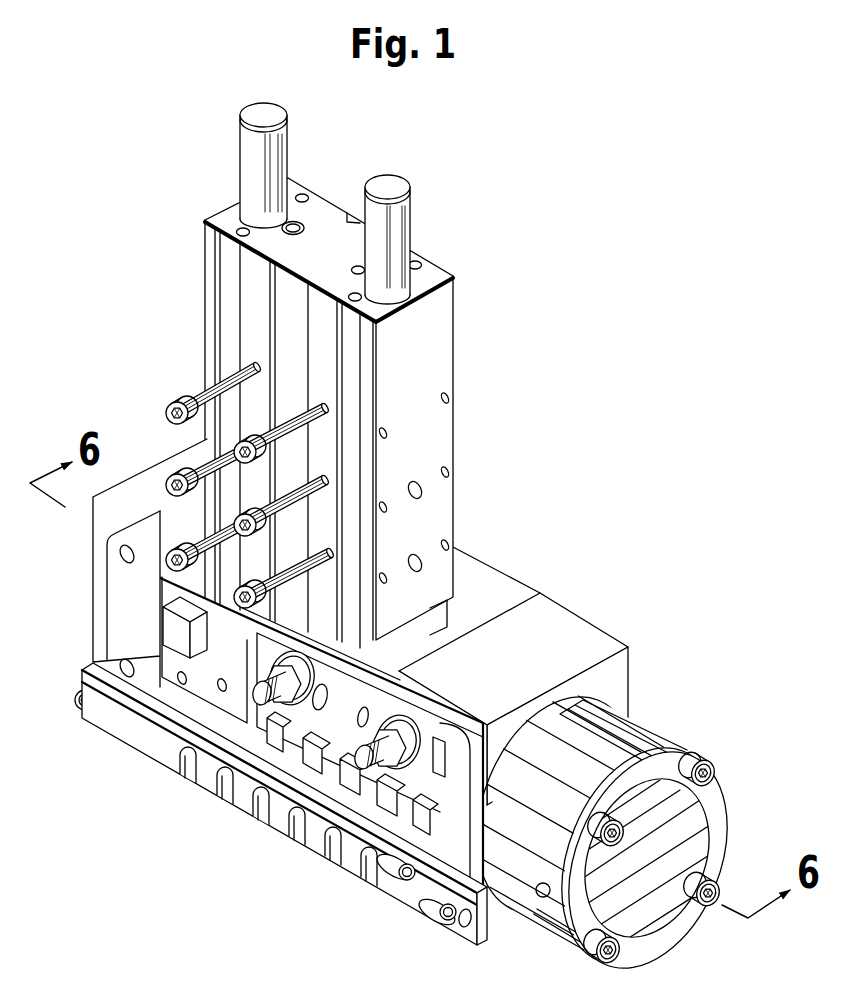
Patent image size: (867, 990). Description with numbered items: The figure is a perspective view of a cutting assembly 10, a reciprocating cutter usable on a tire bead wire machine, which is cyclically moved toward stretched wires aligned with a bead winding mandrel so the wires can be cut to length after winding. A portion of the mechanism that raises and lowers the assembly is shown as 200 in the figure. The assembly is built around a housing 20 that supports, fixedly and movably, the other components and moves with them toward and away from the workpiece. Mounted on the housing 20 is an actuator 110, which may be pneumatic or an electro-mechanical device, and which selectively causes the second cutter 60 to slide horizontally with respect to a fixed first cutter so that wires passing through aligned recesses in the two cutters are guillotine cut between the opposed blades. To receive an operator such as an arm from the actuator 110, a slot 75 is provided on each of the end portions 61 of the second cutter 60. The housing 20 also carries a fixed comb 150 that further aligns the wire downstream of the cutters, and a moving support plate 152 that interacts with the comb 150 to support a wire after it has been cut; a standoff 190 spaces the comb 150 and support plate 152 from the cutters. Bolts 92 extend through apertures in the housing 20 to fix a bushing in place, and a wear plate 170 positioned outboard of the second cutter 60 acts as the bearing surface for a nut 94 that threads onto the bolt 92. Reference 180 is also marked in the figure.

The cutting assembly 10 is at (467, 178).
The housing 20 is at (570, 636).
The second cutter 60 is at (207, 697).
The end portions 61 is at (170, 632).
The slot 75 is at (183, 656).
The bolt 92 is at (340, 742).
The nut 94 is at (93, 575).
The actuator 110 is at (687, 817).
The comb 150 is at (284, 812).
The support plate 152 is at (330, 850).
The wear plate 170 is at (347, 703).
The threaded stud 180 is at (363, 757).
The standoff 190 is at (395, 870).
The mechanism to raise and lower the assembly 200 is at (432, 358).